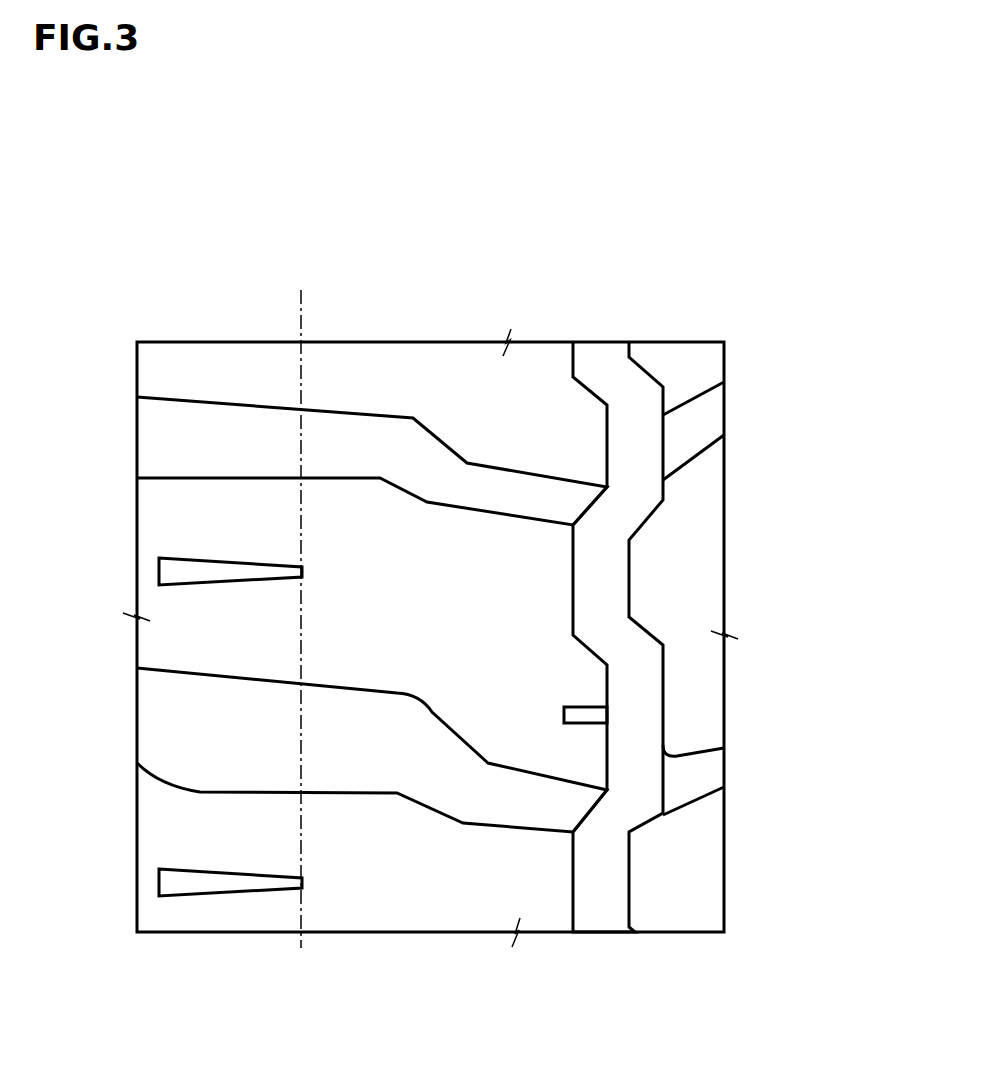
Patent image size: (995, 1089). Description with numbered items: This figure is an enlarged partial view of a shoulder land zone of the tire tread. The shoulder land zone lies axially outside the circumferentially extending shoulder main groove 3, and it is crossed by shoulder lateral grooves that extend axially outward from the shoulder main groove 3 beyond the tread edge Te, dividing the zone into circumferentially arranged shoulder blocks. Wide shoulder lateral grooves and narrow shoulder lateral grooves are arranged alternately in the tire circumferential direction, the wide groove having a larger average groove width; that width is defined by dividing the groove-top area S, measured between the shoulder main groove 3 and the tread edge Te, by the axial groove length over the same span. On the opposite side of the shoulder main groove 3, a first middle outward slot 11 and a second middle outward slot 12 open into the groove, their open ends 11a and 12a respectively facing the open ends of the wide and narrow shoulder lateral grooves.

The tread edge Te is at (300, 325).
The shoulder main groove 3 is at (600, 360).
The second middle outward slot 12 is at (693, 395).
The open end of second middle outward slot 12a is at (658, 452).
The first middle outward slot 11 is at (695, 748).
The open end of first middle outward slot 11a is at (663, 788).
The area of shoulder lateral groove S is at (418, 760).